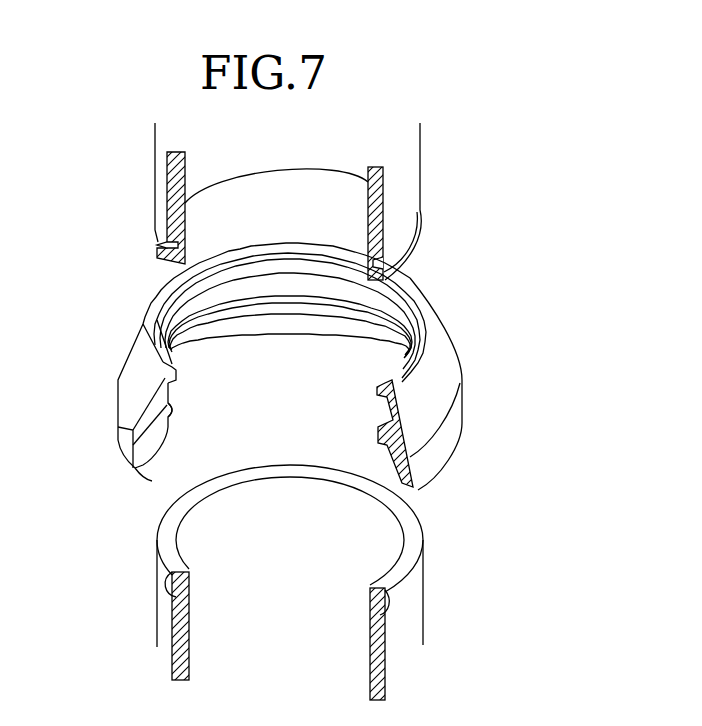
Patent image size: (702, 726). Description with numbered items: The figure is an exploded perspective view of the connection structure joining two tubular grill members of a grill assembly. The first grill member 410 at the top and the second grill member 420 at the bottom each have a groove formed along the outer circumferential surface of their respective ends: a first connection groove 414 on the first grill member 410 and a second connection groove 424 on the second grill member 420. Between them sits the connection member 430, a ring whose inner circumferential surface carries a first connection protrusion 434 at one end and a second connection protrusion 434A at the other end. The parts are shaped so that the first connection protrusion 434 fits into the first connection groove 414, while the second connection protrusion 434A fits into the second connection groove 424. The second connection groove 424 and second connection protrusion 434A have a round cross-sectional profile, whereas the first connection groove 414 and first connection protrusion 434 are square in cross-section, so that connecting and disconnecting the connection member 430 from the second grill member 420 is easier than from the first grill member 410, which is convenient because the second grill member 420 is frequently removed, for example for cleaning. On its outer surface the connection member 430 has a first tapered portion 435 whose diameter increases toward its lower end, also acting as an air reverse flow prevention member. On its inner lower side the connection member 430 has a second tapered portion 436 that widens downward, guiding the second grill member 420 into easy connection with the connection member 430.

The first grill member 410 is at (441, 181).
The first connection groove 414 is at (160, 252).
The second grill member 420 is at (452, 530).
The second connection groove 424 is at (172, 587).
The connection member 430 is at (302, 373).
The first connection protrusion 434 is at (178, 370).
The second connection protrusion 434A is at (174, 408).
The first tapered portion 435 is at (134, 358).
The second tapered portion 436 is at (146, 479).